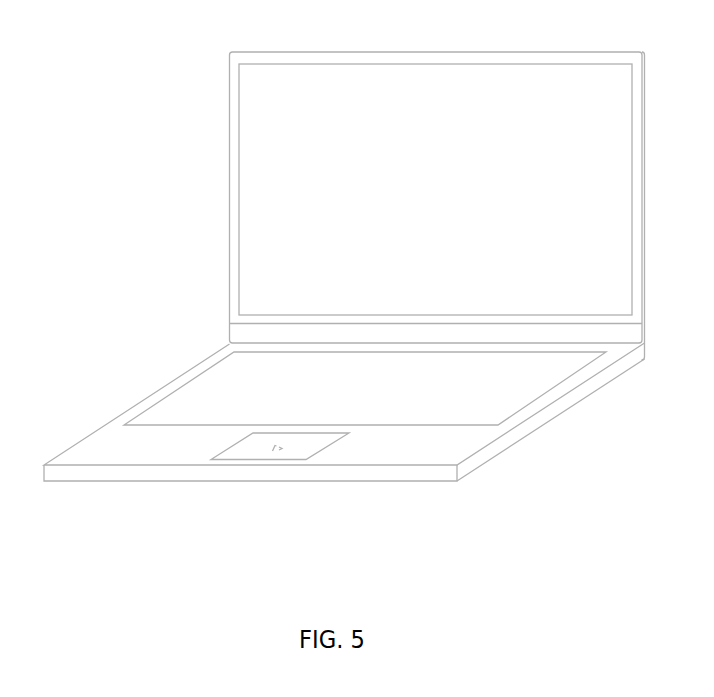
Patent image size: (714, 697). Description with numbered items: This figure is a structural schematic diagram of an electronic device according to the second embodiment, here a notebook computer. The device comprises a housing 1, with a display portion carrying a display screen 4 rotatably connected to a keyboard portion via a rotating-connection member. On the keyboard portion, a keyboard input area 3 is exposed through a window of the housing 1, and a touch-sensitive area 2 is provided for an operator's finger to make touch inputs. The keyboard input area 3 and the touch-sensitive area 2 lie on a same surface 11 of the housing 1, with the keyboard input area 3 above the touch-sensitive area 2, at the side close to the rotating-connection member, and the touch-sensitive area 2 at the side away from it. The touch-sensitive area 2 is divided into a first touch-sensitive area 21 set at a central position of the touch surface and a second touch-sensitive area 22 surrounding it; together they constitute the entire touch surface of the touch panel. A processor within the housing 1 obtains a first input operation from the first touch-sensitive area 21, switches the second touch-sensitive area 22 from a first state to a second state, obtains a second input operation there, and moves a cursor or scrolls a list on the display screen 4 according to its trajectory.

The housing 1 is at (331, 440).
The surface 11 is at (92, 448).
The touch-sensitive area 2 is at (280, 510).
The first touch-sensitive area 21 is at (247, 488).
The second touch-sensitive area 22 is at (296, 451).
The keyboard input area 3 is at (195, 379).
The display screen 4 is at (236, 168).